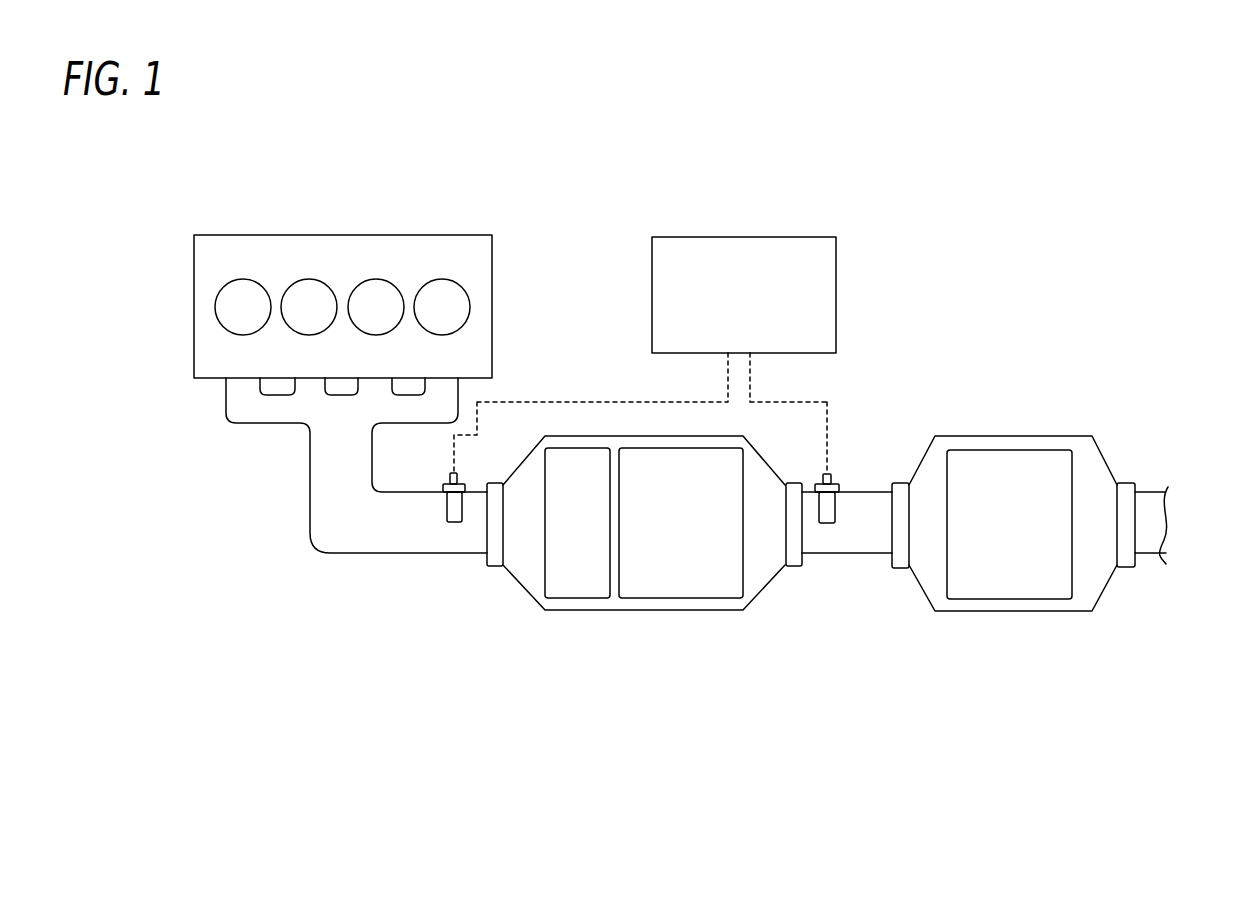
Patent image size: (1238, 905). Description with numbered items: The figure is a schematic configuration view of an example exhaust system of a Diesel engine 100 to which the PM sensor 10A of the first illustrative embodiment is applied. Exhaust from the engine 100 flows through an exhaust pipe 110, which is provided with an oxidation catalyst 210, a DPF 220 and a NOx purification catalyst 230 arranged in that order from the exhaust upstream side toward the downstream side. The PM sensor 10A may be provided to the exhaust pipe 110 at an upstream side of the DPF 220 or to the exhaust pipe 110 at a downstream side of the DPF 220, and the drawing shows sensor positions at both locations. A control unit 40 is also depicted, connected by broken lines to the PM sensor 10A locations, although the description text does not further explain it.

The engine 100 is at (492, 341).
The exhaust pipe 110 is at (310, 467).
The control unit (ECU) 40 is at (756, 309).
The PM sensor 10A is at (482, 470).
The oxidation catalyst 210 is at (602, 535).
The DPF 220 is at (705, 535).
The NOx purification catalyst 230 is at (1035, 537).